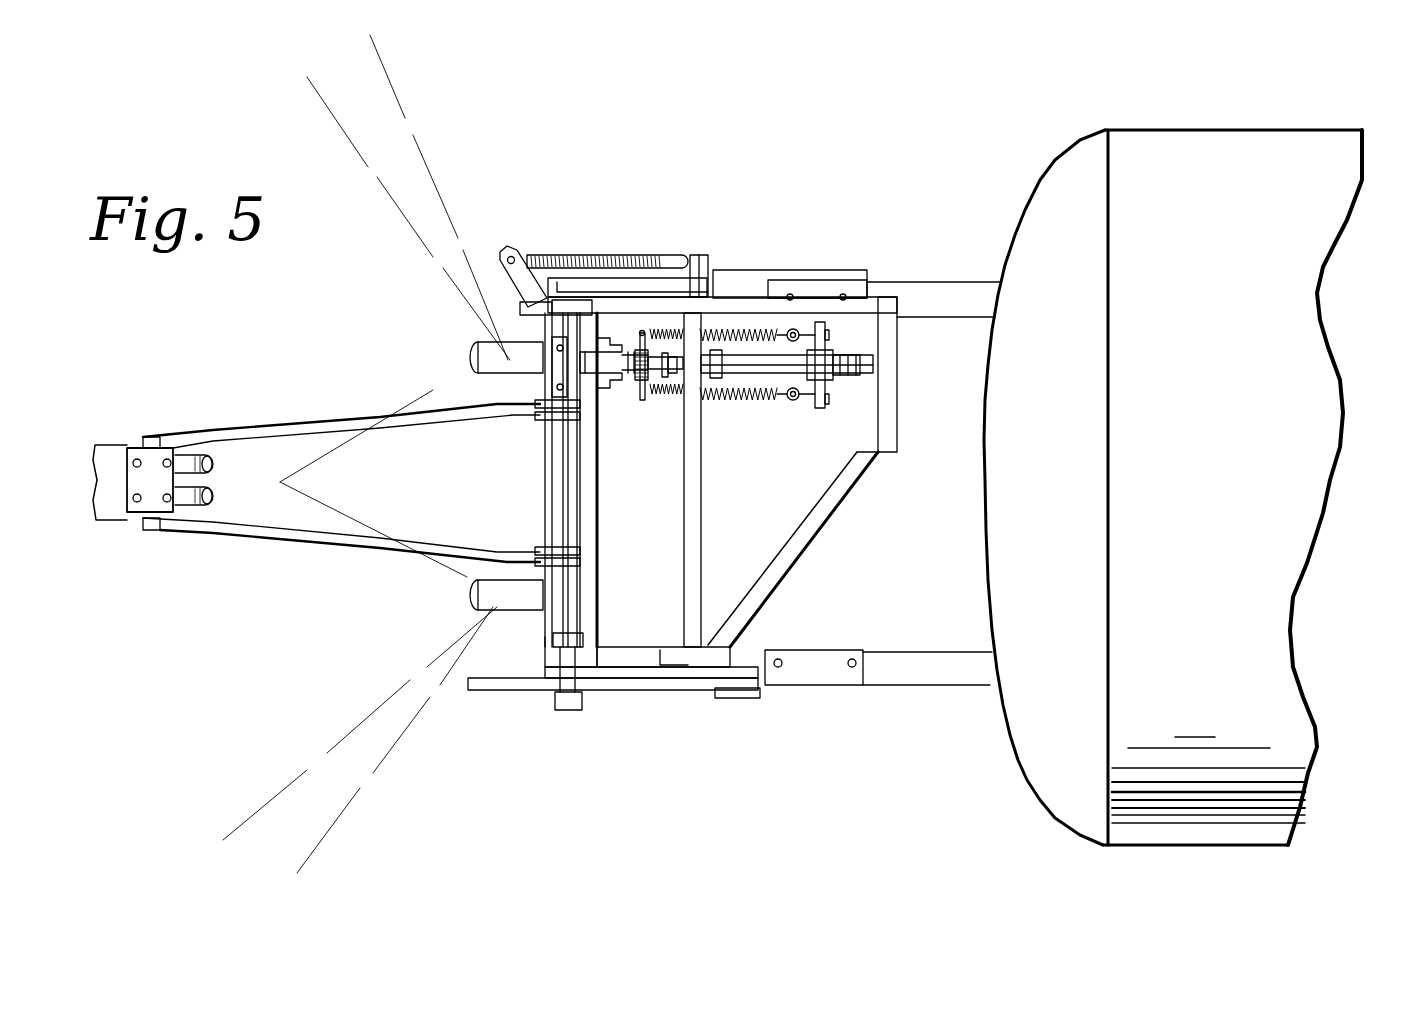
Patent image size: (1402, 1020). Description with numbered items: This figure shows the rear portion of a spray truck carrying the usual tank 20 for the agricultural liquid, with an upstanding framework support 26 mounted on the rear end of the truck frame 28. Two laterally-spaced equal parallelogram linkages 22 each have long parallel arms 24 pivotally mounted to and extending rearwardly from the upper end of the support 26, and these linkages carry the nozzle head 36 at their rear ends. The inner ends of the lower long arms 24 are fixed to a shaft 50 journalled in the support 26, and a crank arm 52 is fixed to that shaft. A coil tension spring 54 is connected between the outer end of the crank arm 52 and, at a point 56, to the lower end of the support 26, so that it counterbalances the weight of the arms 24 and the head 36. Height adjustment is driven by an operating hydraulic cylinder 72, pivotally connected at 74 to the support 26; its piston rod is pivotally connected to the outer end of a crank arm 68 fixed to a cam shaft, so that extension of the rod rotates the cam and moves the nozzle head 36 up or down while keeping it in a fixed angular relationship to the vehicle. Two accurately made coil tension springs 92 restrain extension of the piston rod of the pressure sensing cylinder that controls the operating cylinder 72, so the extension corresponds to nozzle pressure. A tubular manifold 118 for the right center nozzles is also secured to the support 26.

The tank 20 is at (1173, 466).
The parallelogram linkage 22 is at (341, 473).
The long parallel arm 24 is at (341, 488).
The upstanding framework support 26 is at (849, 525).
The frame 28 is at (856, 481).
The nozzle head 36 is at (130, 431).
The shaft 50 is at (587, 511).
The crank arm 52 is at (641, 249).
The coil tension spring 54 is at (607, 235).
The spring connection point 56 is at (518, 299).
The crank arm 68 is at (649, 384).
The operating hydraulic cylinder 72 is at (779, 384).
The pivotal connection 74 is at (832, 383).
The coil tension spring 92 is at (732, 389).
The tubular manifold 118 is at (461, 600).